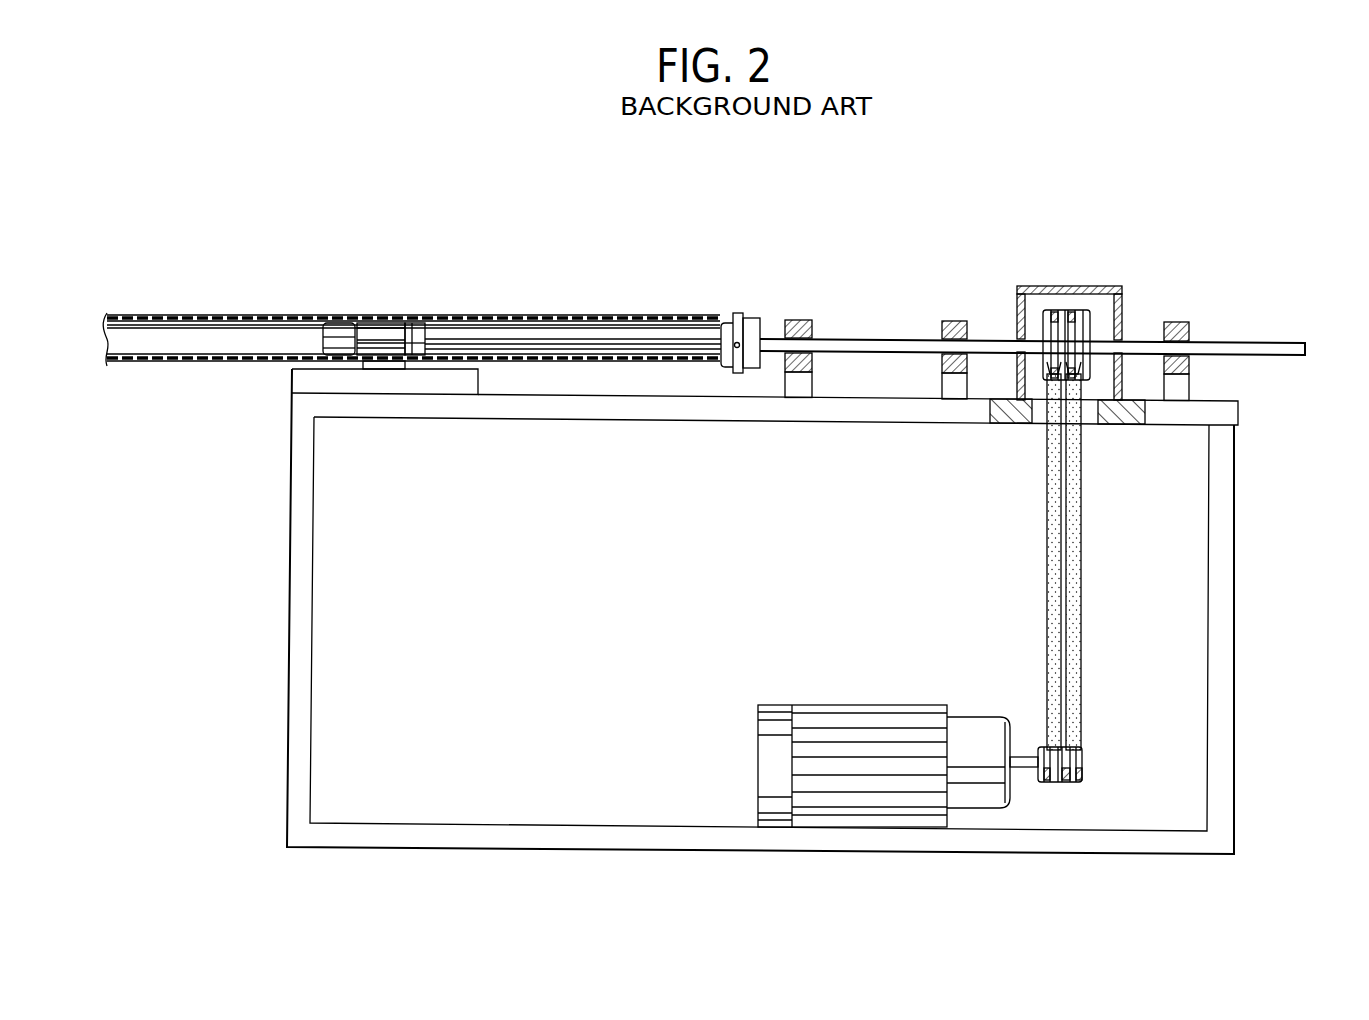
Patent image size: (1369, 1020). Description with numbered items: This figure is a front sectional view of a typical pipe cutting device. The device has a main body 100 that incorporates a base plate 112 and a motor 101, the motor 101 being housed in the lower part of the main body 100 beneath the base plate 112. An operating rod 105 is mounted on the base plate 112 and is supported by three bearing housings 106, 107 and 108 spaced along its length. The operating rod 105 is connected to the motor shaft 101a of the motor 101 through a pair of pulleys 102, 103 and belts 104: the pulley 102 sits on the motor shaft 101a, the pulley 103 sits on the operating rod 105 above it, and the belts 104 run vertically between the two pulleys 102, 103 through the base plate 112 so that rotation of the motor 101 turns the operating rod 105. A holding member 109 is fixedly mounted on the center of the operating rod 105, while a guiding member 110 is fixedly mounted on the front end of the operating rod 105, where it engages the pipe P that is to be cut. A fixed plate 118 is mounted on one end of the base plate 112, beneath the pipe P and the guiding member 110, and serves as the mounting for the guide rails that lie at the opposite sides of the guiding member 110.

The pipe P is at (188, 318).
The main body 100 is at (276, 563).
The motor 101 is at (836, 725).
The motor shaft 101a is at (1020, 752).
The pulley 102 is at (1083, 748).
The pulley 103 is at (1090, 318).
The belts 104 is at (1083, 563).
The operating rod 105 is at (1265, 341).
The bearing housing 106 is at (796, 319).
The bearing housing 107 is at (958, 320).
The bearing housing 108 is at (1180, 323).
The holding member 109 is at (733, 316).
The guiding member 110 is at (334, 330).
The base plate 112 is at (1236, 408).
The fixed plate 118 is at (308, 383).